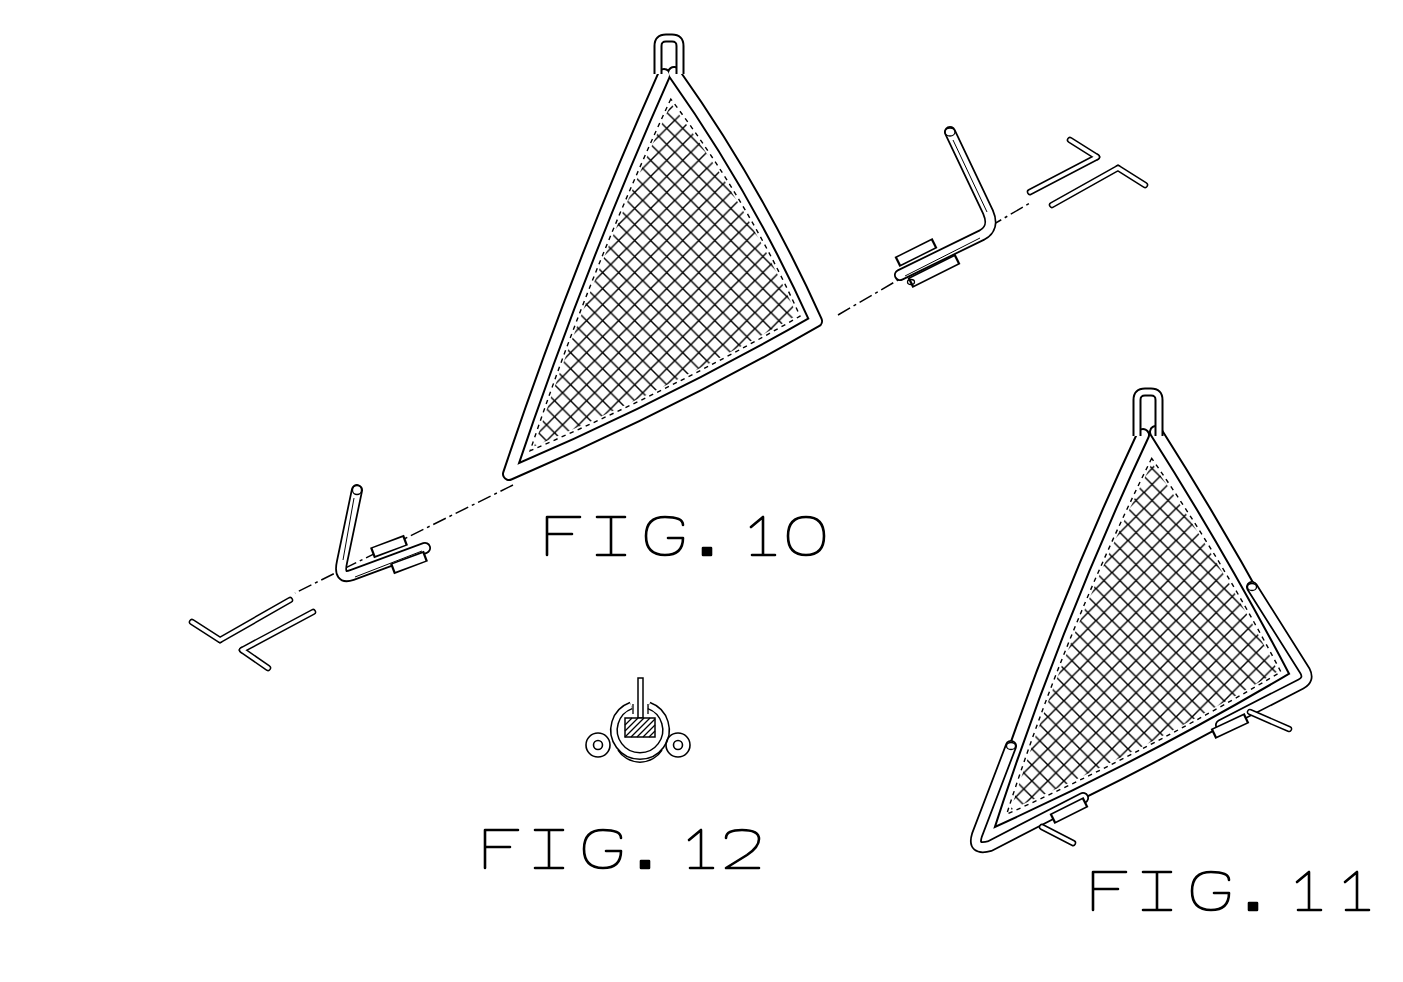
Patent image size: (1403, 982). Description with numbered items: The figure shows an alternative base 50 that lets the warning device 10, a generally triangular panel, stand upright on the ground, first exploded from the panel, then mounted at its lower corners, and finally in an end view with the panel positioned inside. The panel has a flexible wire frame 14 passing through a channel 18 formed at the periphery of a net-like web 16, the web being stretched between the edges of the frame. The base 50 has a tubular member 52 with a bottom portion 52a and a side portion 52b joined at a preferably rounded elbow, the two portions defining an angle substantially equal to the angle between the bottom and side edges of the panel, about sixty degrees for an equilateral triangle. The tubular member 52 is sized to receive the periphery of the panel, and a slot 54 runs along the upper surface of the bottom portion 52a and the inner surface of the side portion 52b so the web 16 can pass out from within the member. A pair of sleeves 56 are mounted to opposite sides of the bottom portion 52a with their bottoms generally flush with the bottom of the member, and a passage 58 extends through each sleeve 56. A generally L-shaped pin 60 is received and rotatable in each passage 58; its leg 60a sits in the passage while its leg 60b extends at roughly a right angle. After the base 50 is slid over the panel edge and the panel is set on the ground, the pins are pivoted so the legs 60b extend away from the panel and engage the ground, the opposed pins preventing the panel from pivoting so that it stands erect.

In FIG. 10, the warning device 10 is at (570, 241).
In FIG. 12, the flexible wire frame 14 is at (640, 747).
In FIG. 12, the web 16 is at (646, 690).
In FIG. 12, the channel 18 is at (620, 727).
In FIG. 10, the base 50 is at (981, 96).
In FIG. 11, the base 50 is at (1277, 642).
In FIG. 10, the tubular member 52 is at (977, 140).
In FIG. 10, the bottom portion 52a is at (967, 257).
In FIG. 12, the bottom portion 52a is at (660, 754).
In FIG. 10, the side portion 52b is at (983, 173).
In FIG. 10, the slot 54 is at (946, 160).
In FIG. 12, the slot 54 is at (637, 700).
In FIG. 10, the sleeves 56 is at (913, 243).
In FIG. 11, the sleeves 56 is at (1090, 808).
In FIG. 12, the sleeves 56 is at (590, 738).
In FIG. 10, the passage 58 is at (915, 285).
In FIG. 12, the passage 58 is at (595, 748).
In FIG. 10, the pin 60 is at (716, 404).
In FIG. 11, the pin 60 is at (1070, 836).
In FIG. 10, the leg 60a is at (1105, 185).
In FIG. 10, the leg 60b is at (1138, 177).